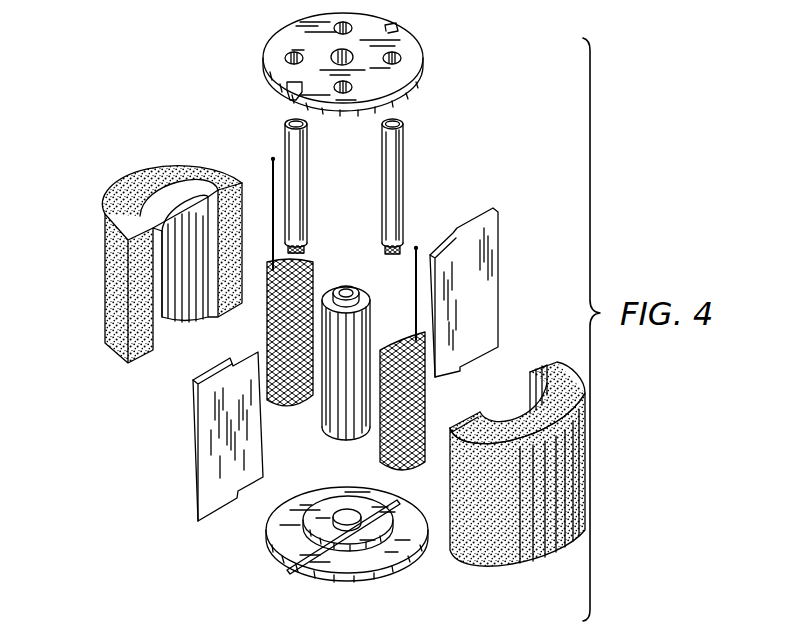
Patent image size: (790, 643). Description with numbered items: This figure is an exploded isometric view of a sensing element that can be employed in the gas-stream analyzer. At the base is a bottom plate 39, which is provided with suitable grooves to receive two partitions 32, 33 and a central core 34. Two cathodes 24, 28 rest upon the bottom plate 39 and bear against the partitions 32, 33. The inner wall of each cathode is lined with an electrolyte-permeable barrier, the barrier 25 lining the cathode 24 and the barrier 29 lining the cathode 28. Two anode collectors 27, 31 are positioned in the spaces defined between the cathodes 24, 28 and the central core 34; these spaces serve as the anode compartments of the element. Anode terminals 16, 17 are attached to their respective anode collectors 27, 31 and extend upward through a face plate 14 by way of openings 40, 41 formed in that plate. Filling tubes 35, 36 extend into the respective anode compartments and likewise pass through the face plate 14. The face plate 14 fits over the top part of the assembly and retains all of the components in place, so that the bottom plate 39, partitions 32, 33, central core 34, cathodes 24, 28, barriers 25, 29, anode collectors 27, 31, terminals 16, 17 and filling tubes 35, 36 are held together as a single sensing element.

The face plate 14 is at (273, 38).
The anode terminal 16 is at (270, 166).
The anode terminal 17 is at (420, 247).
The cathode 24 is at (105, 292).
The electrolyte-permeable barrier 25 is at (169, 202).
The anode collector 27 is at (270, 326).
The cathode 28 is at (496, 563).
The electrolyte-permeable barrier 29 is at (540, 380).
The anode collector 31 is at (427, 399).
The partition 32 is at (193, 490).
The partition 33 is at (492, 240).
The central core 34 is at (322, 427).
The filling tube 35 is at (281, 134).
The filling tube 36 is at (398, 161).
The bottom plate 39 is at (357, 583).
The opening 40 is at (317, 43).
The opening 41 is at (367, 70).